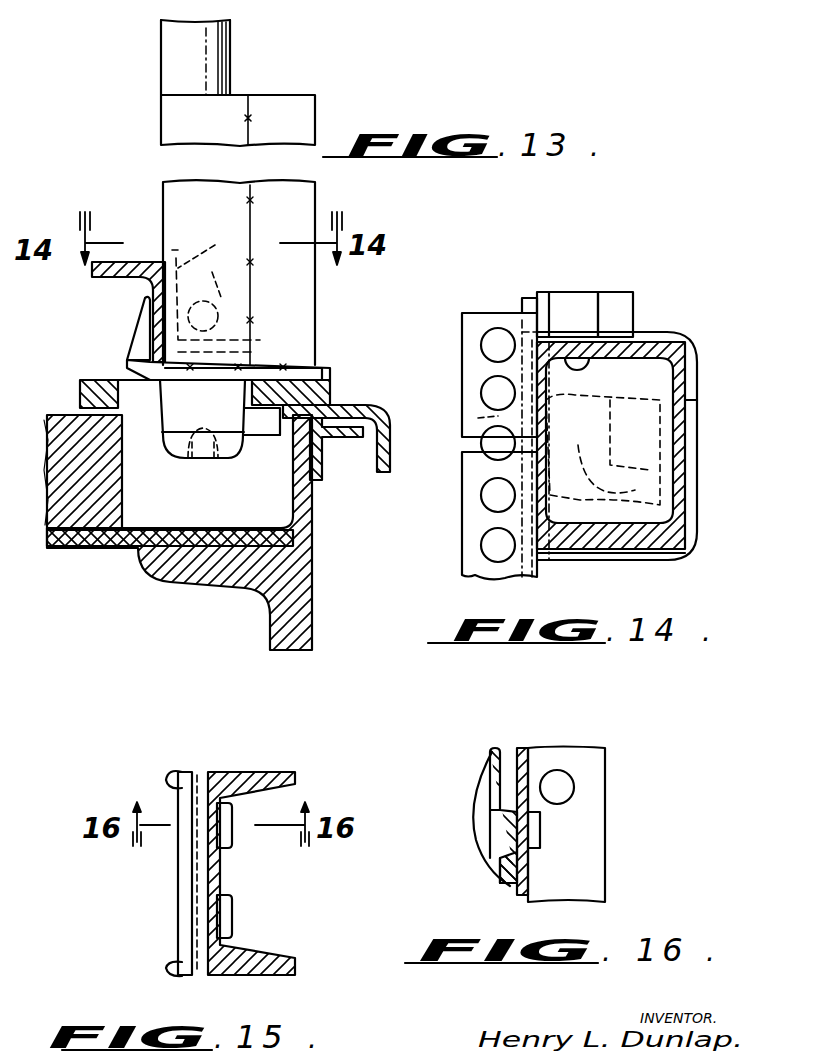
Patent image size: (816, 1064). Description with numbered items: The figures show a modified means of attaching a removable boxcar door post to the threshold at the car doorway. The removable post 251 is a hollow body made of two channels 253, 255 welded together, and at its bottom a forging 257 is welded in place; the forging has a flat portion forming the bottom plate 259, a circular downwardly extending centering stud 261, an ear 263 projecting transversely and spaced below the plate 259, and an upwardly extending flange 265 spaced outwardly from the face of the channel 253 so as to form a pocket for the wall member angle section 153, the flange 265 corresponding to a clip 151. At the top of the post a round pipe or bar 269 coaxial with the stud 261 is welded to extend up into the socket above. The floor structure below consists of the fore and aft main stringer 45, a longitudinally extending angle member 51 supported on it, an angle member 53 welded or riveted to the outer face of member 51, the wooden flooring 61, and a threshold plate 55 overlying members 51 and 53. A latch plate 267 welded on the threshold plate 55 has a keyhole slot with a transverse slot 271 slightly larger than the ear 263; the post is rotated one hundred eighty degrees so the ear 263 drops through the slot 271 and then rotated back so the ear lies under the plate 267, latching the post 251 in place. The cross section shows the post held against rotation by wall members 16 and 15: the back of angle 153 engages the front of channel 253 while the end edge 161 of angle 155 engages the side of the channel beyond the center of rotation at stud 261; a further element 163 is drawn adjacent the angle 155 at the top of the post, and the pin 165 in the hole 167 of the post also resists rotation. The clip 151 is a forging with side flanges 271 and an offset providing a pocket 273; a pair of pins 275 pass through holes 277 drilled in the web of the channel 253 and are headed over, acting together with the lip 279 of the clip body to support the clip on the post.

In FIG. 14, the wall member 15 is at (460, 505).
In FIG. 14, the wall member 16 is at (460, 331).
In FIG. 13, the main stringer 45 is at (298, 577).
In FIG. 13, the angle member 51 is at (55, 550).
In FIG. 13, the angle member 53 is at (342, 463).
In FIG. 13, the threshold plate 55 is at (362, 408).
In FIG. 13, the wooden flooring 61 is at (80, 408).
In FIG. 15, the clip 151 is at (180, 922).
In FIG. 13, the angle 153 is at (138, 234).
In FIG. 14, the angle 153 is at (485, 312).
In FIG. 13, the angle 155 is at (216, 285).
In FIG. 14, the angle 155 is at (612, 292).
In FIG. 14, the end edge 161 is at (550, 337).
In FIG. 14, the bolt head 163 is at (570, 310).
In FIG. 13, the pin 165 is at (216, 302).
In FIG. 14, the pin 165 is at (592, 370).
In FIG. 16, the hole 167 is at (575, 790).
In FIG. 13, the removable post 251 is at (163, 194).
In FIG. 14, the channel 253 is at (578, 553).
In FIG. 15, the channel 253 is at (245, 772).
In FIG. 16, the channel 253 is at (590, 770).
In FIG. 14, the channel 255 is at (650, 560).
In FIG. 13, the forging 257 is at (328, 372).
In FIG. 14, the forging 257 is at (655, 330).
In FIG. 13, the bottom plate 259 is at (248, 385).
In FIG. 14, the bottom plate 259 is at (585, 490).
In FIG. 13, the centering stud 261 is at (186, 450).
In FIG. 13, the ear 263 is at (265, 438).
In FIG. 14, the ear 263 is at (686, 410).
In FIG. 13, the flange 265 is at (138, 337).
In FIG. 13, the latch plate 267 is at (330, 390).
In FIG. 13, the round pipe or bar 269 is at (228, 72).
In FIG. 14, the round pipe or bar 269 is at (588, 515).
In FIG. 13, the slot 271 is at (128, 366).
In FIG. 14, the slot 271 is at (478, 418).
In FIG. 15, the slot 271 is at (168, 774).
In FIG. 16, the slot 271 is at (480, 826).
In FIG. 16, the pocket 273 is at (504, 752).
In FIG. 15, the pins 275 is at (234, 915).
In FIG. 16, the pins 275 is at (540, 850).
In FIG. 15, the holes 277 is at (234, 806).
In FIG. 16, the lip 279 is at (508, 873).